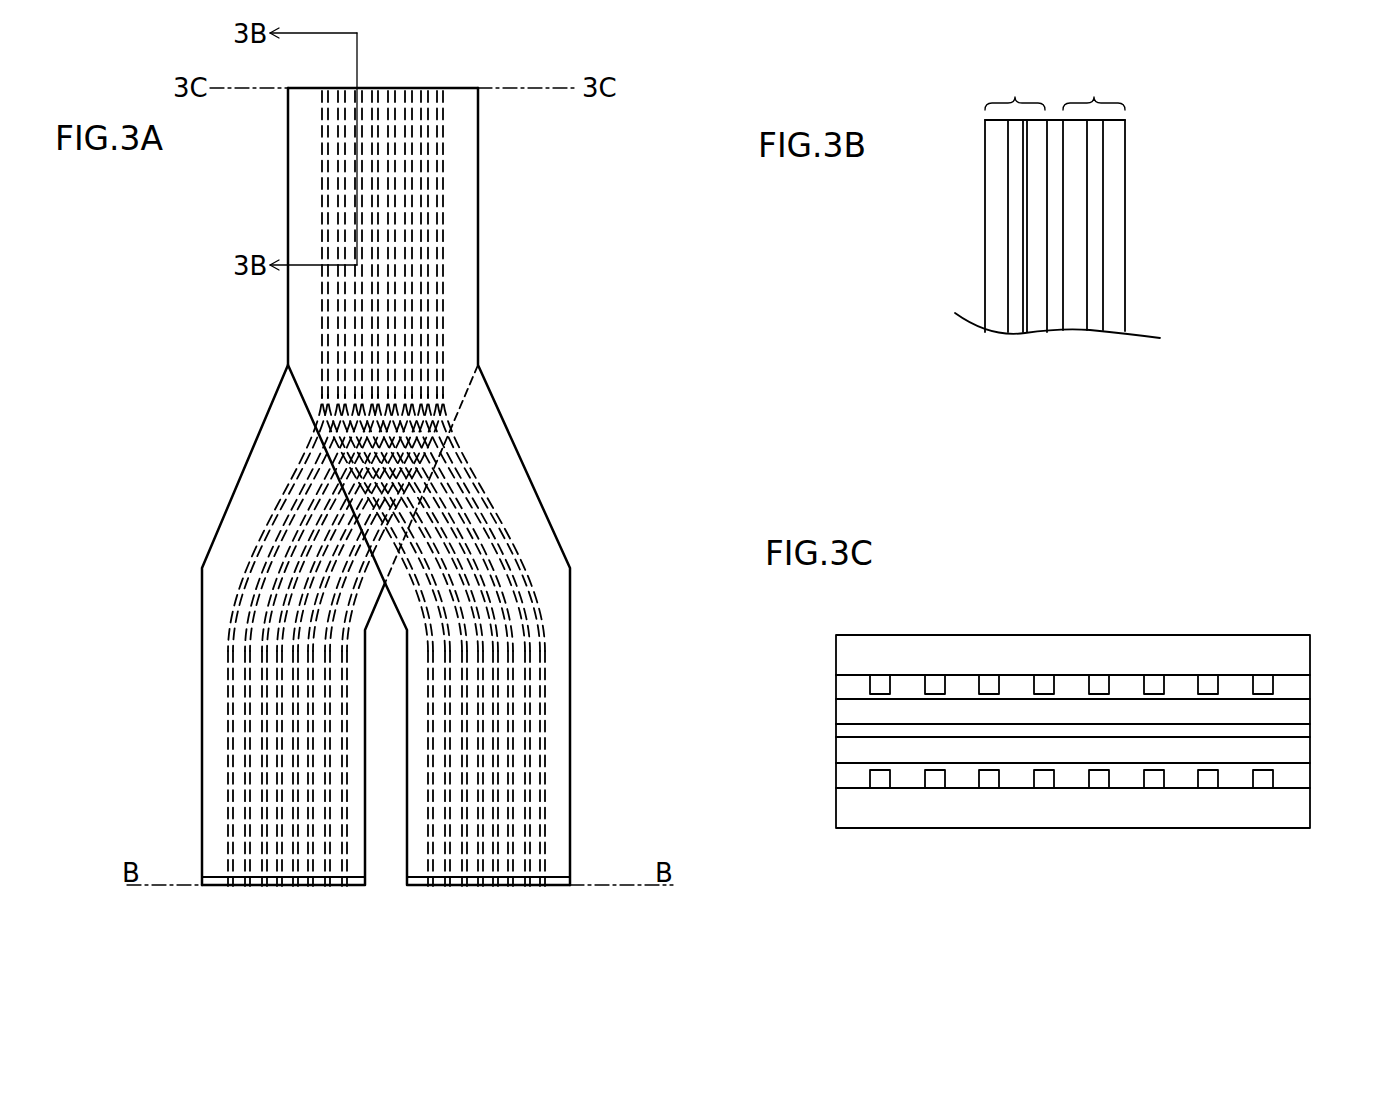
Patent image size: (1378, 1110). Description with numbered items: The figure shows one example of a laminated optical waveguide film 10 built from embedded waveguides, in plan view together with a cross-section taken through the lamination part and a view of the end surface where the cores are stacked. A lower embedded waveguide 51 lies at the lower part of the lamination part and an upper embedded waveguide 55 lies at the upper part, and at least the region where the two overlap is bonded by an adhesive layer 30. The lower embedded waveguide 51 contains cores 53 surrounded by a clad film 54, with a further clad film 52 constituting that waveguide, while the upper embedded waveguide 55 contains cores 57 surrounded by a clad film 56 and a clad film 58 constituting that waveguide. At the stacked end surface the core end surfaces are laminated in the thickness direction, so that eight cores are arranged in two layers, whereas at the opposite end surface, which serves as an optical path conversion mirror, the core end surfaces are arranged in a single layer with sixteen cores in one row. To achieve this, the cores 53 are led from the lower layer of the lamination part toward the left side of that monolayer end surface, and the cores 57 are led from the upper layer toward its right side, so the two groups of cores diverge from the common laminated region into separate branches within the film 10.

In FIG. 3A, the laminated optical waveguide film 10 is at (215, 472).
In FIG. 3C, the laminated optical waveguide film 10 is at (1115, 616).
In FIG. 3B, the adhesive layer 30 is at (1057, 138).
In FIG. 3C, the adhesive layer 30 is at (848, 732).
In FIG. 3A, the lower embedded waveguide 51 is at (182, 741).
In FIG. 3B, the lower embedded waveguide 51 is at (1094, 87).
In FIG. 3C, the lower embedded waveguide 51 is at (1328, 741).
In FIG. 3B, the clad film 52 is at (1117, 172).
In FIG. 3A, the cores 53 is at (228, 812).
In FIG. 3B, the cores 53 is at (1097, 225).
In FIG. 3A, the clad film 54 is at (218, 600).
In FIG. 3B, the clad film 54 is at (1075, 287).
In FIG. 3A, the upper embedded waveguide 55 is at (585, 746).
In FIG. 3B, the upper embedded waveguide 55 is at (1015, 87).
In FIG. 3C, the upper embedded waveguide 55 is at (1328, 635).
In FIG. 3A, the clad film 56 is at (548, 520).
In FIG. 3B, the clad film 56 is at (993, 167).
In FIG. 3A, the cores 57 is at (545, 795).
In FIG. 3B, the cores 57 is at (1015, 220).
In FIG. 3B, the clad film 58 is at (1035, 283).